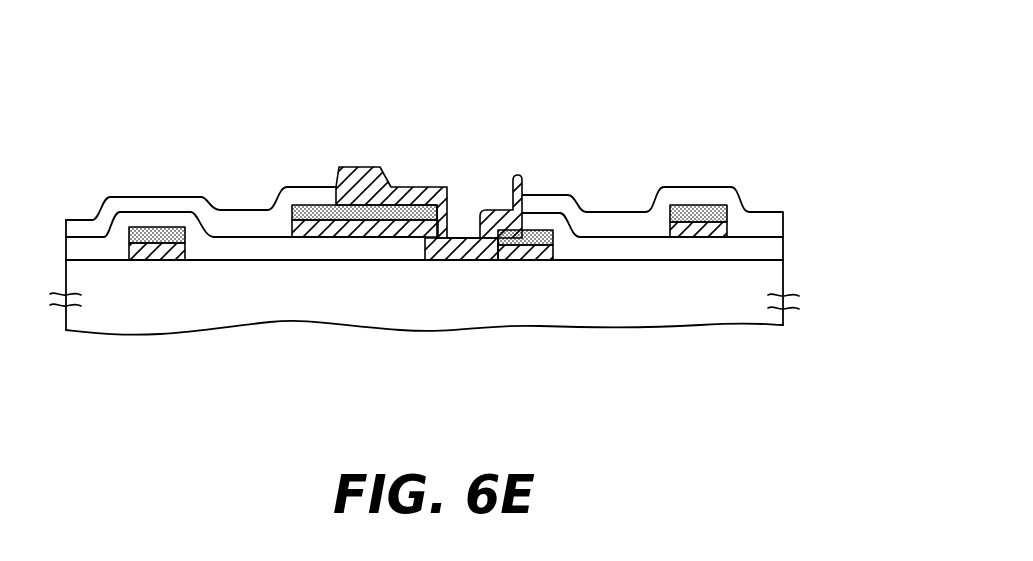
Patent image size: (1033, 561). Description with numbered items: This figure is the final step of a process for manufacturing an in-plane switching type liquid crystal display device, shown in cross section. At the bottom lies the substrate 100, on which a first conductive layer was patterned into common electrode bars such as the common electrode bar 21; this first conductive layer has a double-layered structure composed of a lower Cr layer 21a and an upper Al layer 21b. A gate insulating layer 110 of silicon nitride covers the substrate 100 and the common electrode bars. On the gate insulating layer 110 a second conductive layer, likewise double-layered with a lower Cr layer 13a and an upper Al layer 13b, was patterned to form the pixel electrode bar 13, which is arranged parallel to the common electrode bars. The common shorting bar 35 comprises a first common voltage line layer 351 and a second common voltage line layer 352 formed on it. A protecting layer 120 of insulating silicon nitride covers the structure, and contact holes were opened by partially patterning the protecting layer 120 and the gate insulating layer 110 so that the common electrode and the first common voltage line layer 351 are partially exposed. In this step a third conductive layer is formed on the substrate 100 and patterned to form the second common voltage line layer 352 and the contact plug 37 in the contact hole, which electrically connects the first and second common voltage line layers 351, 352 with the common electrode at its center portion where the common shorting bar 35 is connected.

The substrate 100 is at (770, 283).
The gate insulating layer 110 is at (770, 248).
The protecting layer 120 is at (770, 221).
The common electrode bar 21 is at (338, 327).
The lower Cr layer 21a is at (150, 258).
The upper Al layer 21b is at (172, 243).
The pixel electrode bar 13 is at (694, 316).
The lower Cr layer 13a is at (701, 223).
The upper Al layer 13b is at (705, 213).
The common shorting bar 35 is at (382, 151).
The first common voltage line layer 351 is at (402, 215).
The second common voltage line layer 352 is at (391, 167).
The contact plug 37 is at (463, 235).